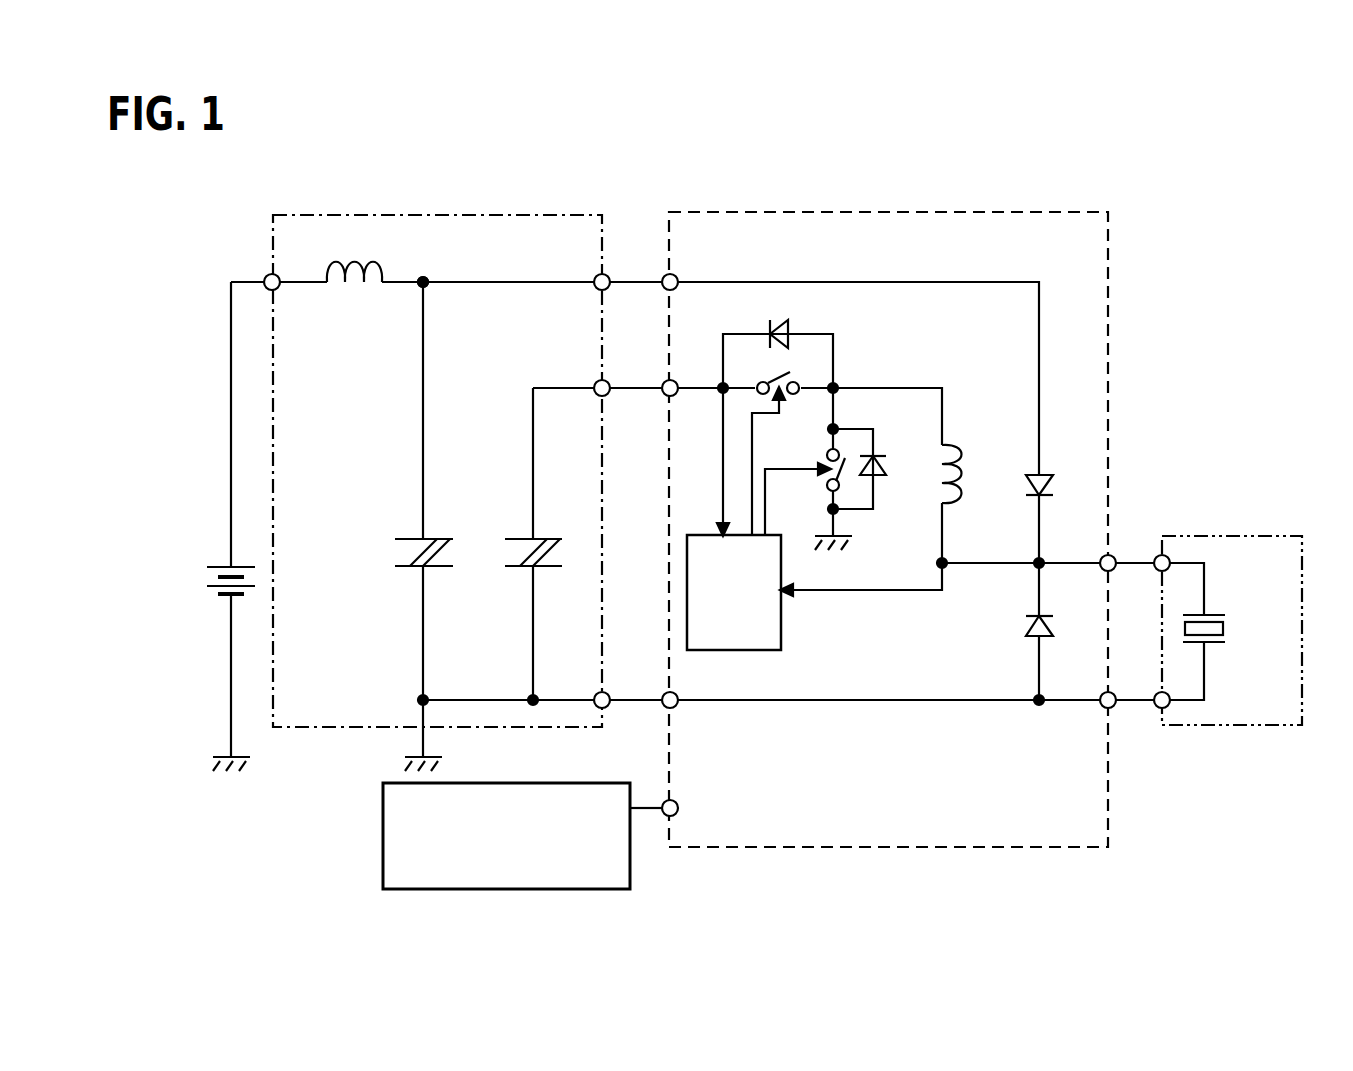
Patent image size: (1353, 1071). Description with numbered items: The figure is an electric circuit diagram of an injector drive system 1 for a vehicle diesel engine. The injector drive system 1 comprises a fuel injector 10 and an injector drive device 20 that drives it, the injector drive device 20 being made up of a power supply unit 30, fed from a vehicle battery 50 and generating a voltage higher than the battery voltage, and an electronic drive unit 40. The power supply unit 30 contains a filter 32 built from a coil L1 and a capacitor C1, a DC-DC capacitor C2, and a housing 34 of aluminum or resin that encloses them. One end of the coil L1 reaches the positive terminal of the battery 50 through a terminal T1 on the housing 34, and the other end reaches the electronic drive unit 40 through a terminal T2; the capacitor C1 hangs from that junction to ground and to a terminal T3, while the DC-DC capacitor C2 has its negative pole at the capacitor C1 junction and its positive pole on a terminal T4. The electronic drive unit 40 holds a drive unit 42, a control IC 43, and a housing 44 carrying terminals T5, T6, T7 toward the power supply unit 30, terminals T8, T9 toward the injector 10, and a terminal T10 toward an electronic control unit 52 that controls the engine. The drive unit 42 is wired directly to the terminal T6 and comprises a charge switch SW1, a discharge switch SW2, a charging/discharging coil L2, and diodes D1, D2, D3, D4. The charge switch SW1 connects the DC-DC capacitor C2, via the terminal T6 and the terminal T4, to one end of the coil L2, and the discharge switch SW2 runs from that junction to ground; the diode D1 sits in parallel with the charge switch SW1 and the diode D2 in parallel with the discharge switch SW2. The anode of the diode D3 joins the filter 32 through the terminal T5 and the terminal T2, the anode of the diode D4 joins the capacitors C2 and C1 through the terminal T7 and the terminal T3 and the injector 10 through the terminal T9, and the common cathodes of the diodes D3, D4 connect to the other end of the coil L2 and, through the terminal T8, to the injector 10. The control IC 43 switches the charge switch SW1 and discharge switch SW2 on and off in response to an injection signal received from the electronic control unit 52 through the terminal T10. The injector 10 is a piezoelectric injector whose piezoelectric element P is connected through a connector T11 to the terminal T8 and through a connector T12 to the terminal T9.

The injector drive system 1 is at (1249, 266).
The fuel injector 10 is at (1229, 536).
The injector drive device 20 is at (706, 187).
The power supply unit 30 is at (452, 202).
The filter 32 is at (450, 270).
The housing 34 is at (534, 214).
The electronic drive unit 40 is at (899, 202).
The drive unit 42 is at (901, 347).
The control IC 43 is at (781, 628).
The housing 44 is at (1000, 212).
The battery 50 is at (206, 565).
The electronic control unit 52 is at (383, 822).
The coil L1 is at (350, 262).
The charging/discharging coil L2 is at (950, 442).
The capacitor C1 is at (408, 537).
The DC-DC capacitor C2 is at (518, 537).
The diode D1 is at (785, 332).
The diode D2 is at (886, 480).
The diode D3 is at (1024, 473).
The diode D4 is at (1024, 630).
The charge switch SW1 is at (770, 378).
The discharge switch SW2 is at (838, 483).
The piezoelectric element P is at (1226, 630).
The terminal T1 is at (266, 275).
The terminal T2 is at (596, 275).
The terminal T3 is at (596, 694).
The terminal T4 is at (596, 382).
The terminal T5 is at (664, 275).
The terminal T6 is at (664, 382).
The terminal T7 is at (664, 694).
The terminal T8 is at (1102, 557).
The terminal T9 is at (1102, 694).
The terminal T10 is at (664, 802).
The connector T11 is at (1156, 557).
The connector T12 is at (1156, 694).